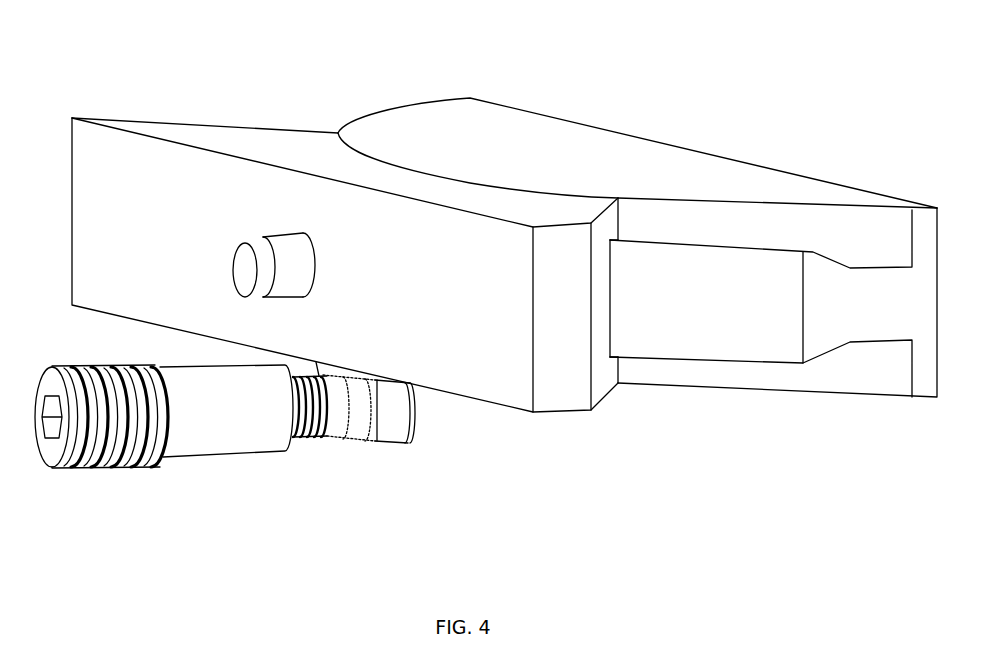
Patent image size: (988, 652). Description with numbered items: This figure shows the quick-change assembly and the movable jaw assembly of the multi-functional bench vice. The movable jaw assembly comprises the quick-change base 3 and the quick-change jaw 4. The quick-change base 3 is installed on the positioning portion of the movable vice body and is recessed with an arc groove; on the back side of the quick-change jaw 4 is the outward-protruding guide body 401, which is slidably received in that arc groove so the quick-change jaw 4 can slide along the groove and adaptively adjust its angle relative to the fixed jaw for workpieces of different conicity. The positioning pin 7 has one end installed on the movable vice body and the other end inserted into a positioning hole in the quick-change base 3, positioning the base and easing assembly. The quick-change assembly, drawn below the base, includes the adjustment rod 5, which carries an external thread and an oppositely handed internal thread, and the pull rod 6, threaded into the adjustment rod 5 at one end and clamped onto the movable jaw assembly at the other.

The quick-change base 3 is at (268, 148).
The quick-change jaw 4 is at (412, 148).
The guide body 401 is at (740, 293).
The adjustment rod 5 is at (250, 430).
The pull rod 6 is at (337, 418).
The positioning pin 7 is at (243, 250).